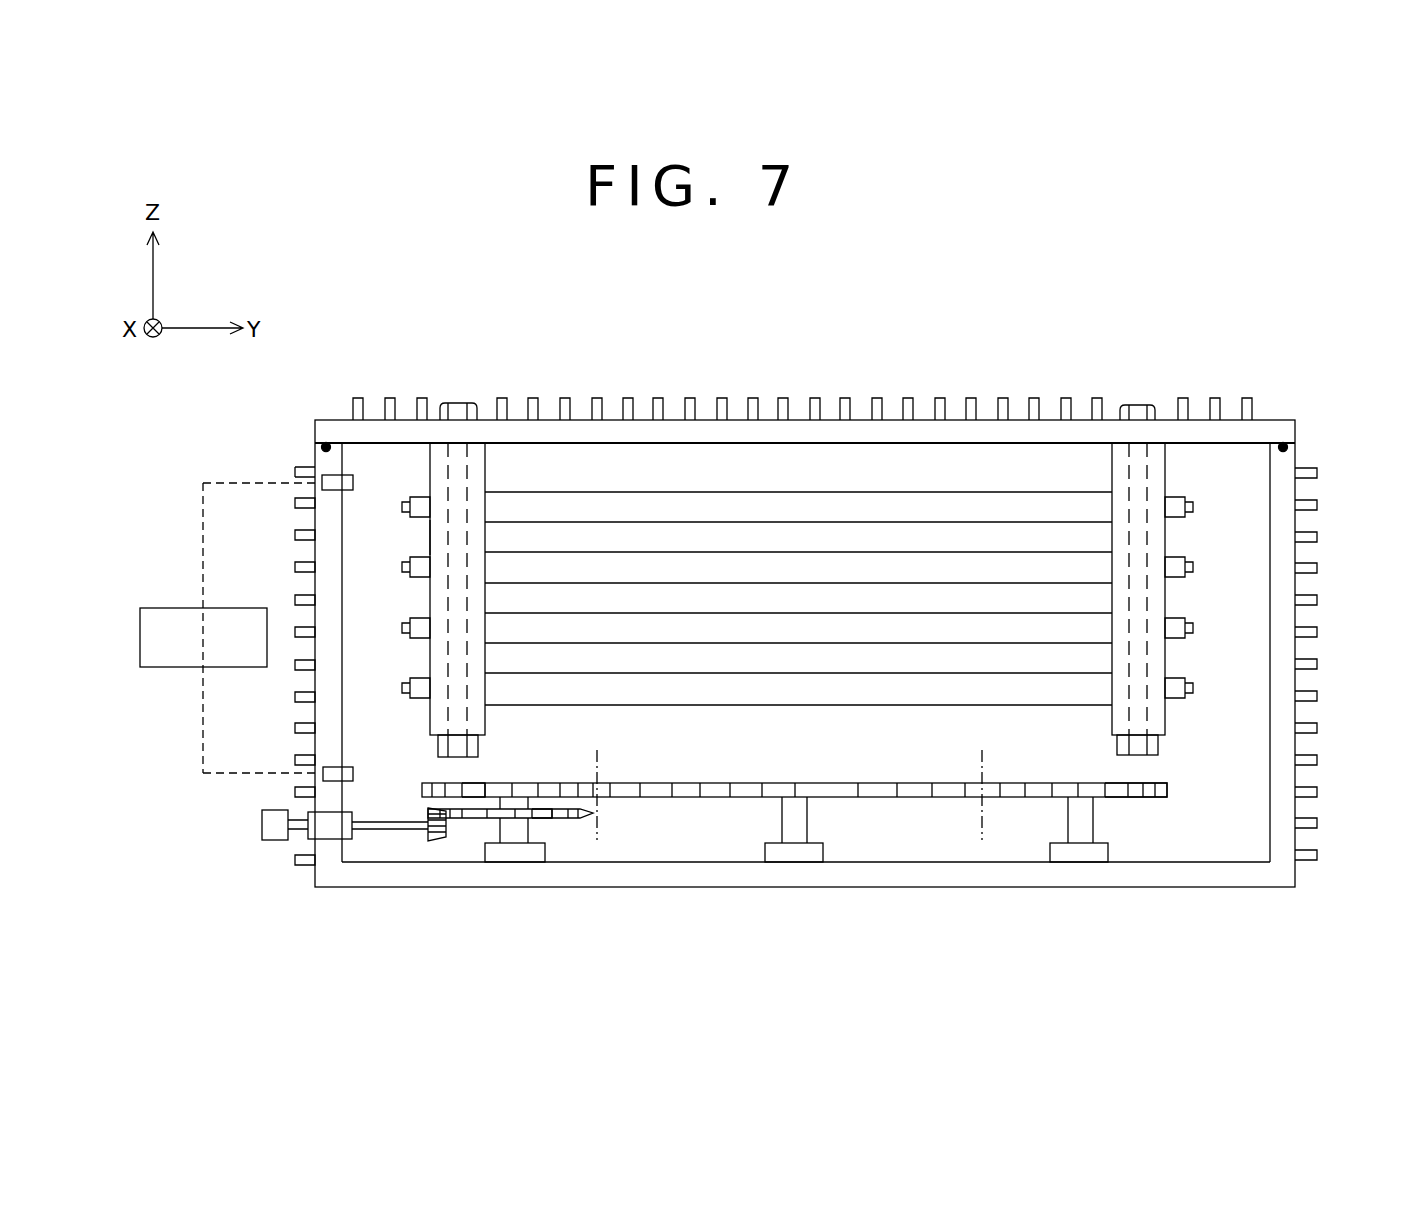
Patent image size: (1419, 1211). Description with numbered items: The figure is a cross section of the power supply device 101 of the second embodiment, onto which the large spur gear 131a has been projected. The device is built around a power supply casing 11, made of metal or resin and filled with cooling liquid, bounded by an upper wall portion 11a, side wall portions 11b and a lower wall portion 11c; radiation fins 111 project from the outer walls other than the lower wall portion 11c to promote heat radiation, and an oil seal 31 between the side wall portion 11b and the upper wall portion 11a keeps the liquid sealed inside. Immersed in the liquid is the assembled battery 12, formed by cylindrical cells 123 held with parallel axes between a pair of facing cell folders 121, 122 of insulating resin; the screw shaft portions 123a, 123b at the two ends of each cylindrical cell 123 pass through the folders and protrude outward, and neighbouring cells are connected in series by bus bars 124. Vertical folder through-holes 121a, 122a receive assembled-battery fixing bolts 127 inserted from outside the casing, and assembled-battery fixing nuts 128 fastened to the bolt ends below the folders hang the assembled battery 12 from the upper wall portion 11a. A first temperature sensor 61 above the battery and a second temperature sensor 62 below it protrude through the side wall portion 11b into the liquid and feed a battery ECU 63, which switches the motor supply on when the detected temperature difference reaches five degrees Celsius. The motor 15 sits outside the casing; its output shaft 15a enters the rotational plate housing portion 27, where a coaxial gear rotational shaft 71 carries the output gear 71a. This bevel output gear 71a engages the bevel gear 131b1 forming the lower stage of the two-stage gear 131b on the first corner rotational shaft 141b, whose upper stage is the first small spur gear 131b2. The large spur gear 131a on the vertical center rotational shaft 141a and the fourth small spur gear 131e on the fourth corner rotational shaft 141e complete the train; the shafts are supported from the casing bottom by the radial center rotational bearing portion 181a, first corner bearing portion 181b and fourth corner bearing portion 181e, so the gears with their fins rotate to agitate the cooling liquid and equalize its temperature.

The power supply device 101 is at (1051, 370).
The power supply casing 11 is at (1313, 428).
The upper wall portion 11a is at (1260, 432).
The side wall portion 11b is at (340, 553).
The lower wall portion 11c is at (1290, 880).
The radiation fins 111 is at (563, 398).
The oil seal 31 is at (326, 444).
The assembled battery 12 is at (1214, 587).
The cell folder 121 is at (440, 470).
The folder through-hole 121a is at (471, 458).
The cell folder 122 is at (1180, 460).
The folder through-hole 122a is at (1157, 455).
The assembled-battery fixing bolt 127 is at (1137, 413).
The assembled-battery fixing nut 128 is at (1160, 744).
The cylindrical cell 123 is at (890, 505).
The screw shaft portion 123a is at (402, 506).
The screw shaft portion 123b is at (1193, 505).
The bus bar 124 is at (420, 600).
The battery ECU 63 is at (157, 608).
The first temperature sensor 61 is at (335, 482).
The second temperature sensor 62 is at (335, 775).
The motor 15 is at (262, 838).
The output shaft 15a is at (300, 828).
The rotational plate housing portion 27 is at (325, 830).
The gear rotational shaft 71 is at (386, 826).
The output gear 71a is at (433, 841).
The large spur gear 131a is at (873, 797).
The two-stage gear 131b is at (595, 835).
The bevel gear 131b1 is at (545, 818).
The first small spur gear 131b2 is at (472, 797).
The fourth small spur gear 131e is at (1113, 797).
The center rotational shaft 141a is at (797, 820).
The first corner rotational shaft 141b is at (513, 830).
The fourth corner rotational shaft 141e is at (1080, 820).
The center rotational bearing portion 181a is at (772, 850).
The first corner bearing portion 181b is at (497, 850).
The fourth corner bearing portion 181e is at (1063, 850).